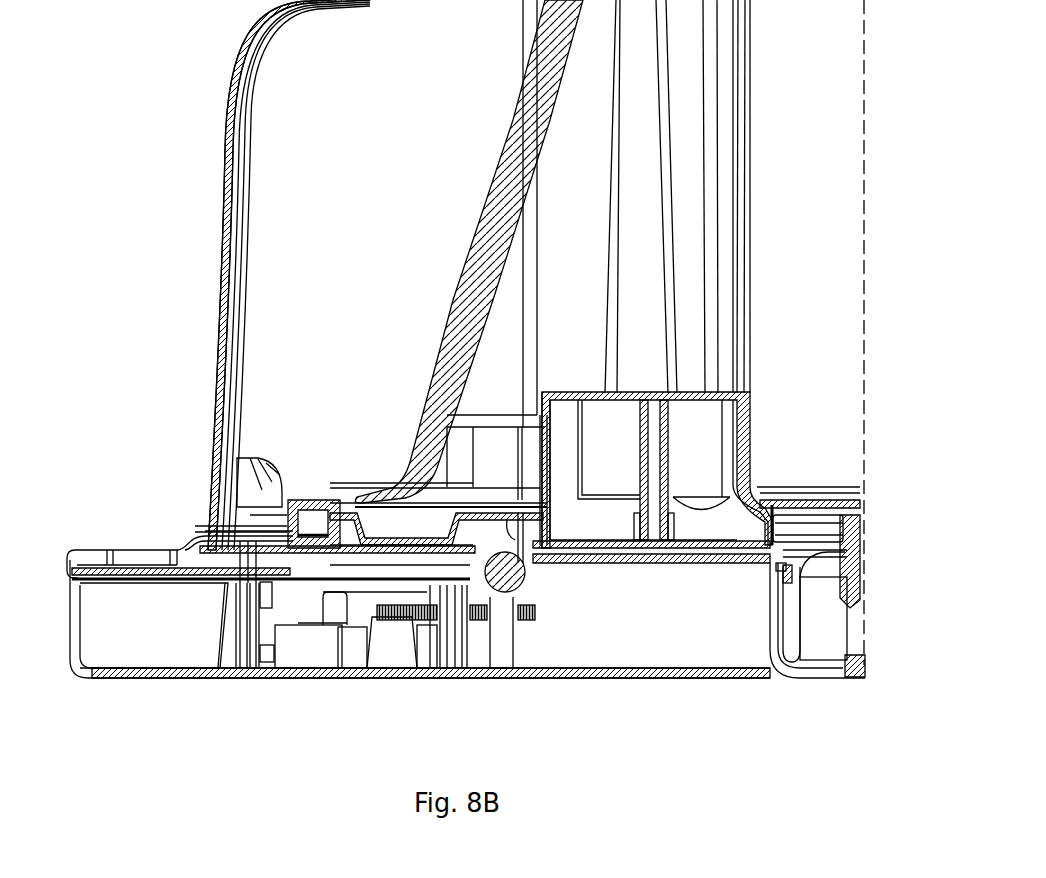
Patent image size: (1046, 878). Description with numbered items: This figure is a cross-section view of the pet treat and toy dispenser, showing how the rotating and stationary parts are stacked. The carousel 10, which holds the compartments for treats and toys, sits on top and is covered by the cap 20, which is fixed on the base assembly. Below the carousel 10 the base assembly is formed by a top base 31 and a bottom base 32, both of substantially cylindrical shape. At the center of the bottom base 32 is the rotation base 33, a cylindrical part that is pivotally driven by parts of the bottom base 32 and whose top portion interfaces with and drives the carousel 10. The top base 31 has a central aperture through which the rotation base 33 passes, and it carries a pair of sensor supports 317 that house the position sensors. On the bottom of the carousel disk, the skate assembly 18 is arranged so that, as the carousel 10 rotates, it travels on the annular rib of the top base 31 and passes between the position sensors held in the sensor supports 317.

The carousel 10 is at (463, 333).
The cap 20 is at (222, 278).
The skate assembly 18 is at (307, 518).
The sensor supports 317 is at (270, 523).
The rotation base 33 is at (703, 422).
The top base 31 is at (78, 570).
The bottom base 32 is at (75, 637).